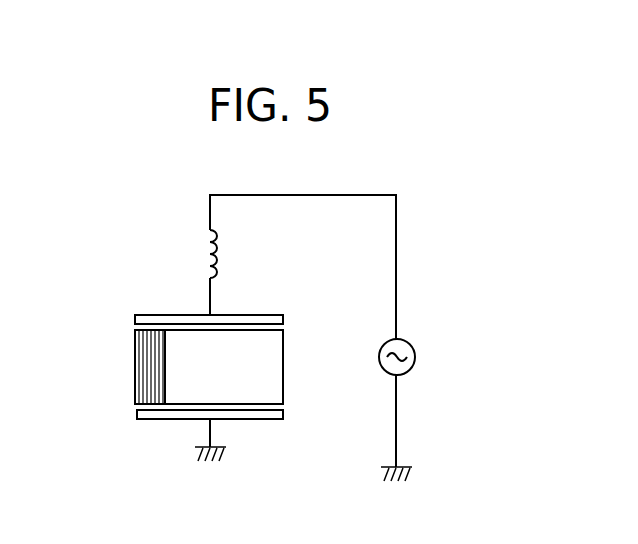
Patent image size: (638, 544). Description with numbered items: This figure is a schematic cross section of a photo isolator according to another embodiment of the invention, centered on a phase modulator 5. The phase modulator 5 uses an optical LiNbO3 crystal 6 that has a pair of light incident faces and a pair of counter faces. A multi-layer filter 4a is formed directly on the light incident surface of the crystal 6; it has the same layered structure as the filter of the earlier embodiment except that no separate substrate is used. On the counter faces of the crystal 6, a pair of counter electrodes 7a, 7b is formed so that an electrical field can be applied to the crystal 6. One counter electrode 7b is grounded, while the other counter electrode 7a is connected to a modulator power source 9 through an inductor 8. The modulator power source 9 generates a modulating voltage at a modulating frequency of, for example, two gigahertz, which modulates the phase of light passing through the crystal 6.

The phase modulator 5 is at (412, 218).
The inductor 8 is at (203, 235).
The counter electrode 7a is at (266, 315).
The LiNbO3 crystal 6 is at (275, 358).
The multi-layer filter 4a is at (137, 352).
The counter electrode 7b is at (272, 420).
The modulator power source 9 is at (413, 366).